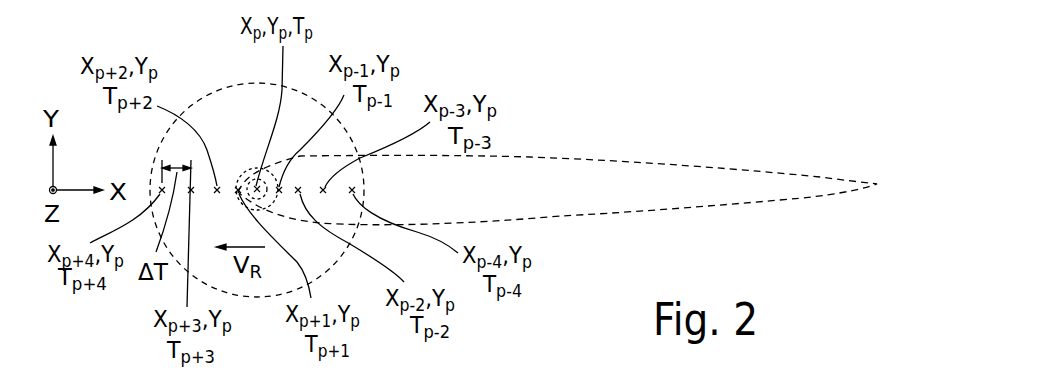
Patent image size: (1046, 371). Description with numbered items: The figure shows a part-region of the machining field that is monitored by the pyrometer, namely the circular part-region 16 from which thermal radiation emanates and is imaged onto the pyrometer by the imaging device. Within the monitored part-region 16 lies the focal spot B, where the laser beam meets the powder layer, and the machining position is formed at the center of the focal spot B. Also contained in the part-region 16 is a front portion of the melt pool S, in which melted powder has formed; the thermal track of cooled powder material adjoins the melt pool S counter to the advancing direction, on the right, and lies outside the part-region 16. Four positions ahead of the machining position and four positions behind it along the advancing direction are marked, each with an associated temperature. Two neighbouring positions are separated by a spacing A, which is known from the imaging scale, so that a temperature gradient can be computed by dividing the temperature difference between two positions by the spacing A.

The circular part-region of the machining field 16 is at (200, 100).
The melt pool S is at (636, 158).
The spacing between two associated positions A is at (175, 168).
The focal spot B is at (248, 184).